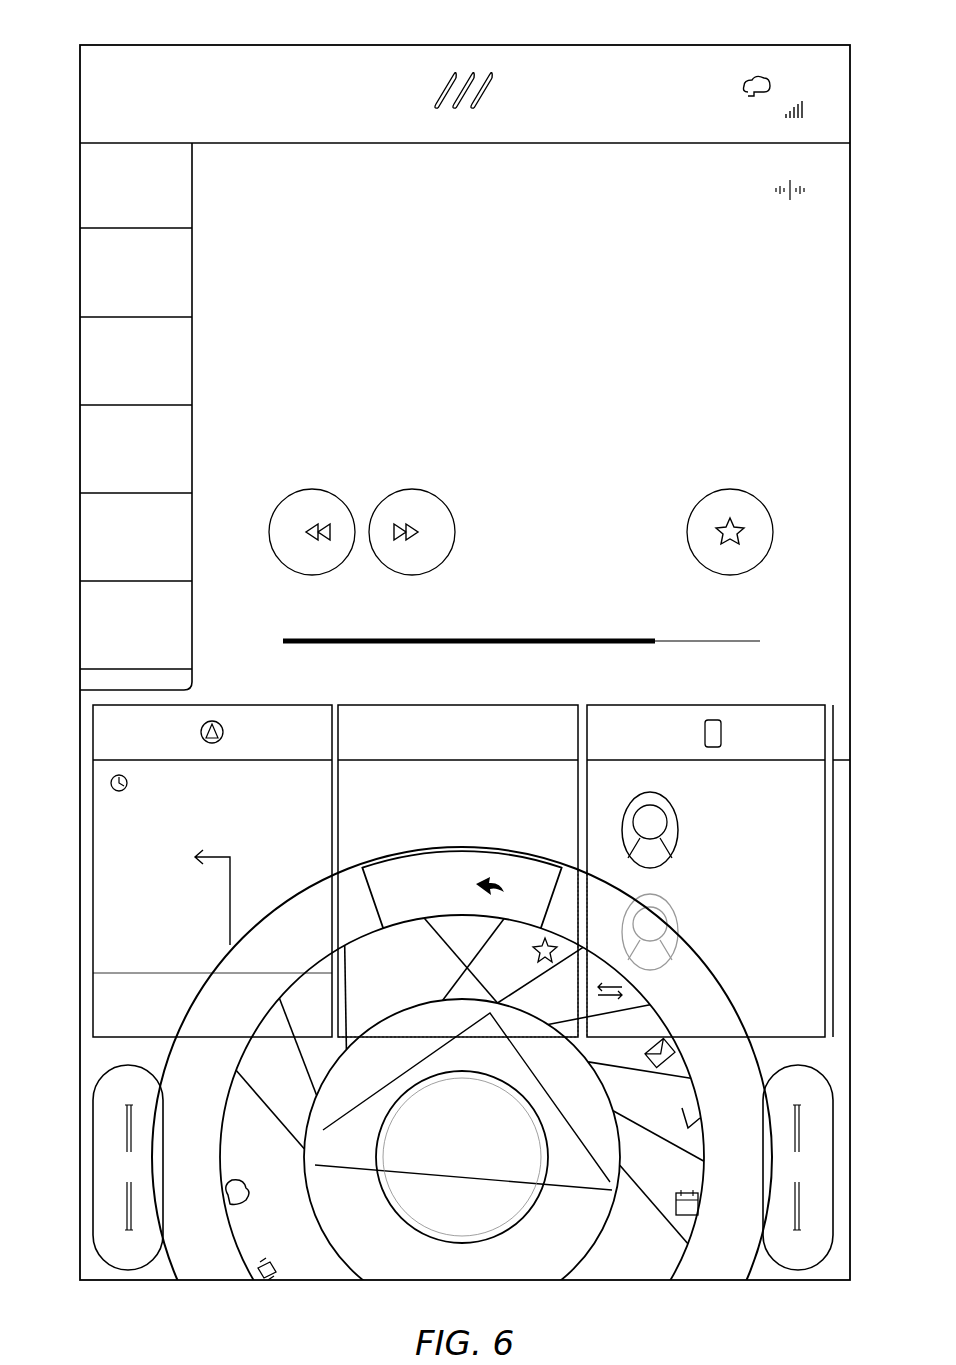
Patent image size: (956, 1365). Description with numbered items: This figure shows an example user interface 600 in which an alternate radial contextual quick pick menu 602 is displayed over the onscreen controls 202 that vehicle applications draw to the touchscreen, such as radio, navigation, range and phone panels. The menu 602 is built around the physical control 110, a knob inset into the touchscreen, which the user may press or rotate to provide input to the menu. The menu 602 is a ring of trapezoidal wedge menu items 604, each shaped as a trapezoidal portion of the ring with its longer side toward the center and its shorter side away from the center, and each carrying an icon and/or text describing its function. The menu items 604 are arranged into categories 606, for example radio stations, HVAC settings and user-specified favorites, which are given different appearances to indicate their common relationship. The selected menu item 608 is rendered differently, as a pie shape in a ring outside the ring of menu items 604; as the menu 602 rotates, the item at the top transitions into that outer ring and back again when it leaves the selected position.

The user interface 600 is at (150, 26).
The onscreen controls 202 is at (853, 140).
The radial contextual quick pick menu 602 is at (742, 1003).
The trapezoidal wedge menu items 604 is at (470, 1116).
The categories 606 is at (470, 1178).
The selected menu item 608 is at (425, 848).
The physical control 110 is at (515, 1235).